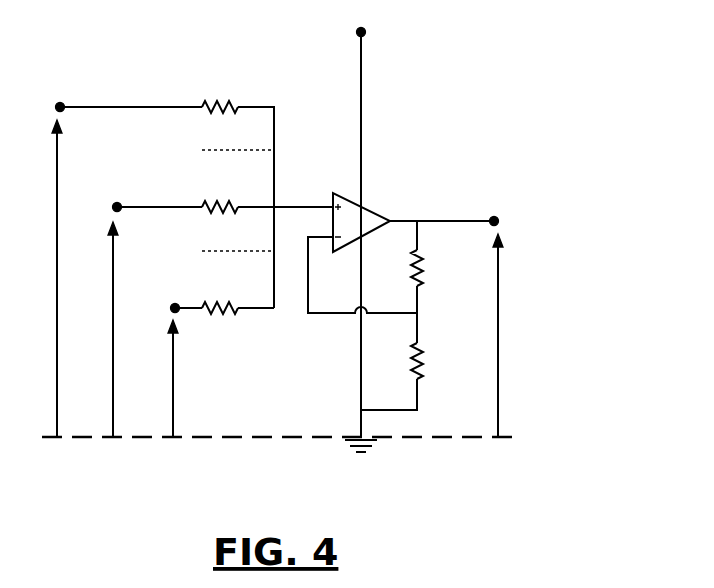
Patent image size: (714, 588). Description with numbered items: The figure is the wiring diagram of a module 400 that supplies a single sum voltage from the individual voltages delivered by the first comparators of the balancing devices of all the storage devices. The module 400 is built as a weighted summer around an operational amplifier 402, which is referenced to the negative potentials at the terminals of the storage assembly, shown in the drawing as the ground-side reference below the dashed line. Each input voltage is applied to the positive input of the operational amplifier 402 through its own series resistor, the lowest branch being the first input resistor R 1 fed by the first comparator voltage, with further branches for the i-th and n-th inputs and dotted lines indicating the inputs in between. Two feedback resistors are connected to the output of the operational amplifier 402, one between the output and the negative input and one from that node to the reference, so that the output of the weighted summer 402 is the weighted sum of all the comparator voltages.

The module 400 is at (513, 88).
The operational amplifier 402 is at (366, 206).
The first input resistor R1 1 is at (220, 290).